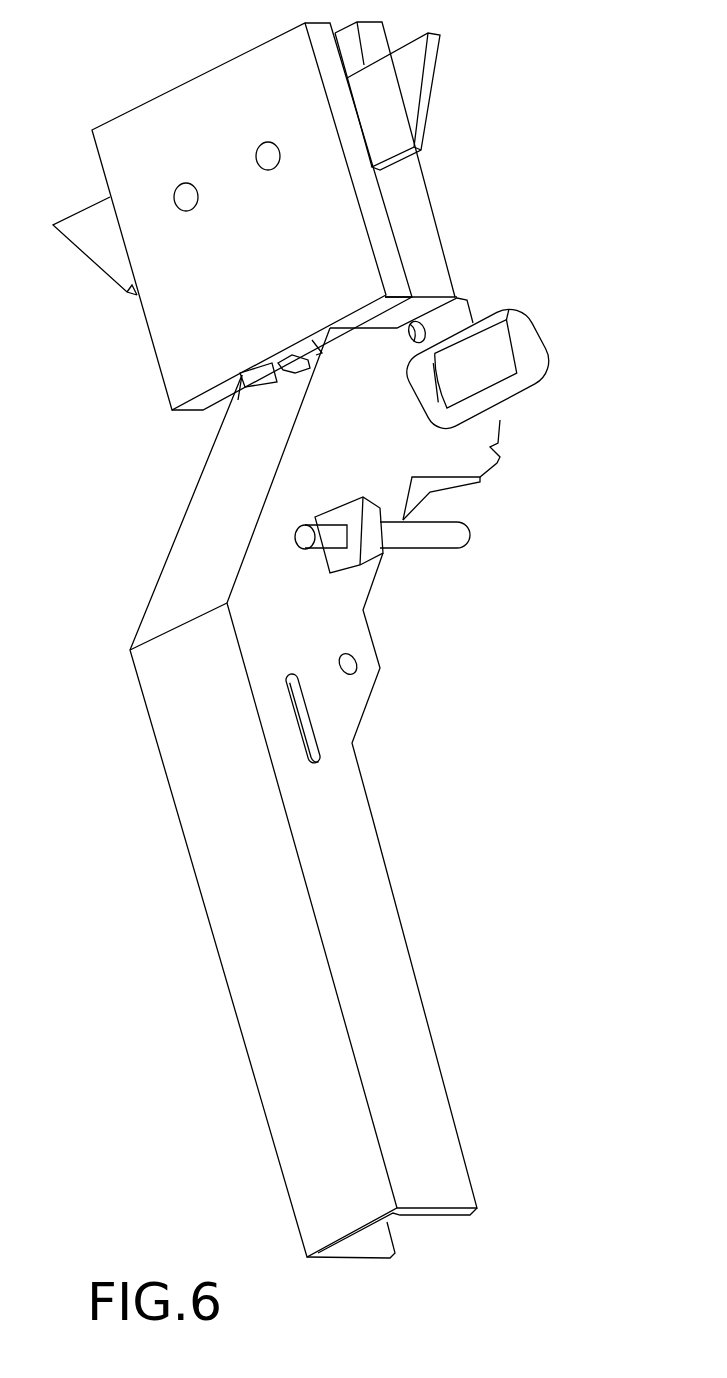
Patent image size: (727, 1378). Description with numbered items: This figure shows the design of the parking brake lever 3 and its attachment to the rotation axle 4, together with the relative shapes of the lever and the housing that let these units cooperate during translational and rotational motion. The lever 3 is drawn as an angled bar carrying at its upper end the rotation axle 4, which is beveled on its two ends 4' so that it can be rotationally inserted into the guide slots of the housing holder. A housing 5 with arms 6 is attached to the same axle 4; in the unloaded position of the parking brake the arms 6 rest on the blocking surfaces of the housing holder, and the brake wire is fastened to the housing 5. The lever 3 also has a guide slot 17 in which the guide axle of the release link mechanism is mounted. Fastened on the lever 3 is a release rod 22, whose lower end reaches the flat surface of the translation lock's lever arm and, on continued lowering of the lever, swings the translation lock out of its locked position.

The lever 3 is at (235, 1013).
The rotation axle 4 is at (499, 341).
The beveled ends of the rotation axle 4' is at (476, 323).
The housing 5 is at (197, 78).
The arms 6 is at (107, 247).
The guide slot 17 is at (352, 743).
The release rod 22 is at (432, 538).